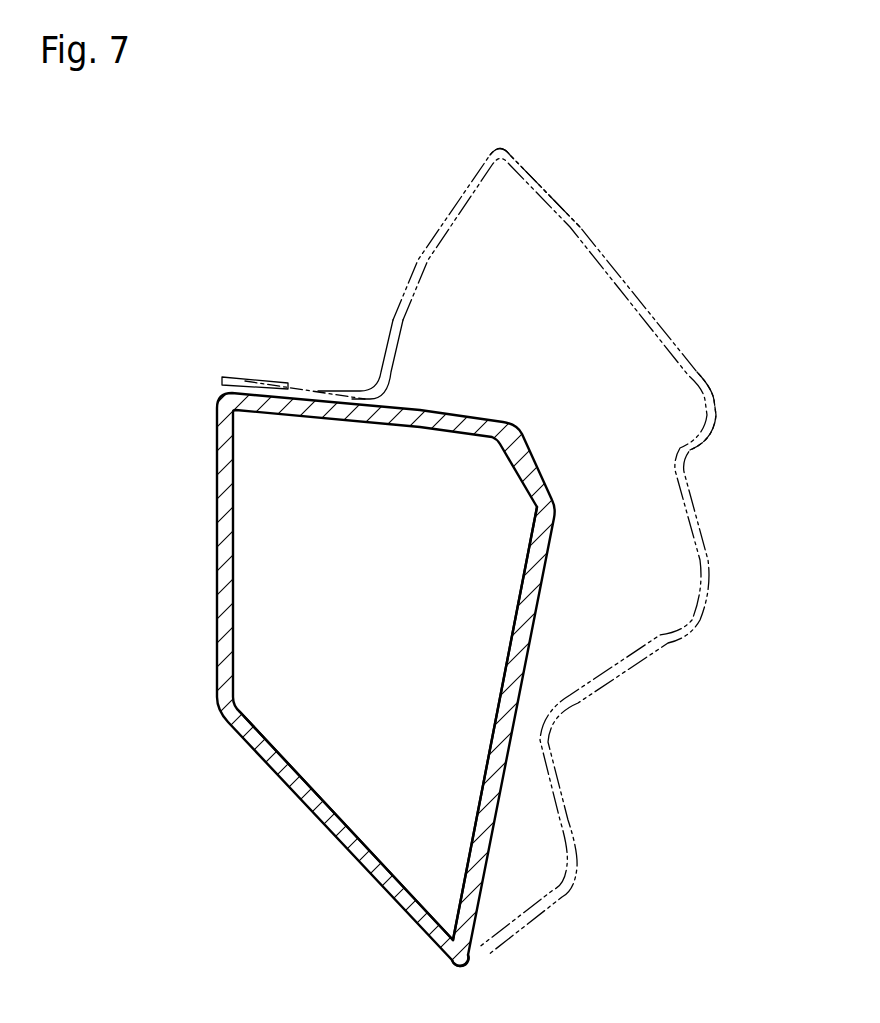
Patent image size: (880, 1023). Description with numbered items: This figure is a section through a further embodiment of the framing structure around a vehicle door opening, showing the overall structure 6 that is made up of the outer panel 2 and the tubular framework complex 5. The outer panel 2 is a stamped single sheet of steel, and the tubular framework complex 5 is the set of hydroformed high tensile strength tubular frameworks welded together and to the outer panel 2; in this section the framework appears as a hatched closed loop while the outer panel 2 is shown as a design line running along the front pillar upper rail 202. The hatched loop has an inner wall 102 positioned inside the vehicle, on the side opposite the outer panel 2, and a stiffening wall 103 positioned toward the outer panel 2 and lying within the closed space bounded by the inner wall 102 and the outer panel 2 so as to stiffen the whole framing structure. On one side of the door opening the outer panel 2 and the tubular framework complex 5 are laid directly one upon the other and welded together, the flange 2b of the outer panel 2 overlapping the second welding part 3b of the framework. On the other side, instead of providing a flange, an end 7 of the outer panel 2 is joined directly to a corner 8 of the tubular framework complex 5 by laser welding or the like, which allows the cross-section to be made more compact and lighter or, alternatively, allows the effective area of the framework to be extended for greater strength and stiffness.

The outer panel 2 is at (582, 236).
The flange 2b is at (242, 377).
The second welding part 3b is at (290, 383).
The tubular framework complex 5 is at (212, 622).
The overall structure 6 is at (578, 177).
The end 7 is at (450, 963).
The corner 8 is at (468, 965).
The inner wall 102 is at (267, 768).
The stiffening wall 103 is at (540, 597).
The front pillar upper rail 202 is at (660, 288).